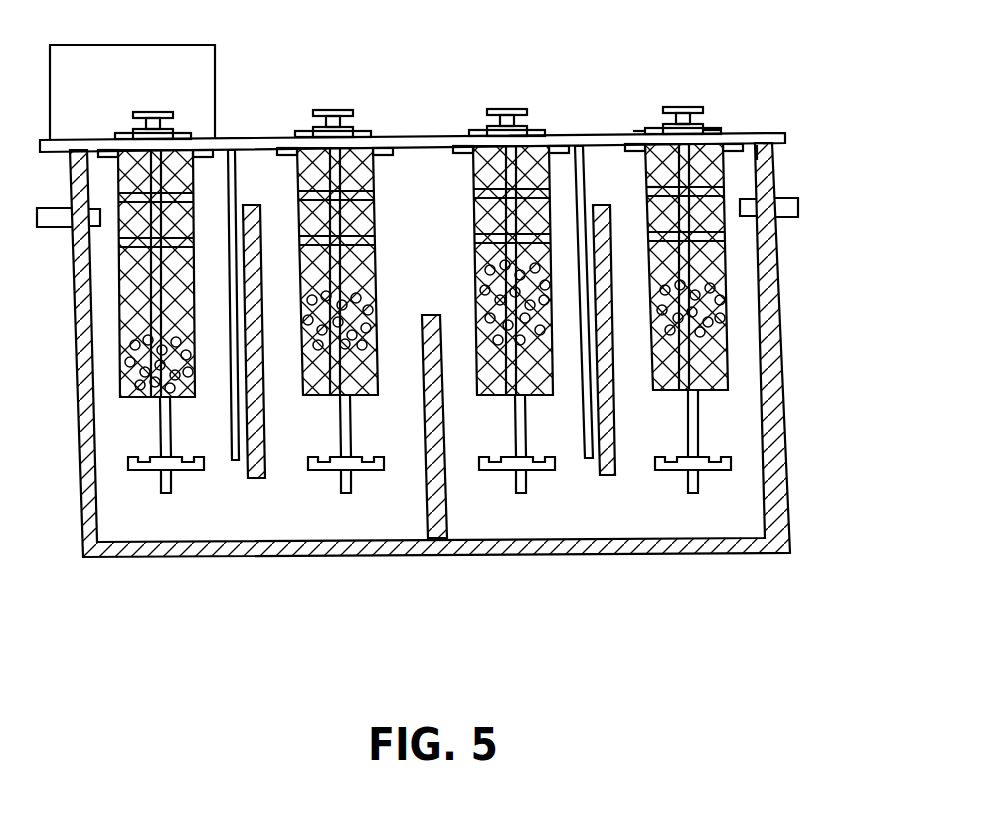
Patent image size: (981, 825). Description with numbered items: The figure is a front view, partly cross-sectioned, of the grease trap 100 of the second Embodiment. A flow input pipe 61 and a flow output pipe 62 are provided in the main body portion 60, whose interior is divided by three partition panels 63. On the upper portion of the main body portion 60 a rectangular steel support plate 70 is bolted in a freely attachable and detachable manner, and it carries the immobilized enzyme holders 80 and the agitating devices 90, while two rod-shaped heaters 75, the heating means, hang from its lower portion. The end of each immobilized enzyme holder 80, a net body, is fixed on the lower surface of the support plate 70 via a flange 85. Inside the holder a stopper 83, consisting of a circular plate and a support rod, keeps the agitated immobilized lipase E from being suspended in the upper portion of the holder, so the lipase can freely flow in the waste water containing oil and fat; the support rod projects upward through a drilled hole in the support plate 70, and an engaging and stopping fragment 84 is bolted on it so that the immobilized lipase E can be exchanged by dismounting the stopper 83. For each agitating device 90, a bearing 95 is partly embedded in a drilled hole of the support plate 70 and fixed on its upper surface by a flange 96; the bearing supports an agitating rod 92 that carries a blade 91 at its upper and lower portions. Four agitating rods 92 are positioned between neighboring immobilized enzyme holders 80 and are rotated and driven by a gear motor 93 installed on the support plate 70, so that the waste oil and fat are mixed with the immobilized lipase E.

The grease trap 100 is at (469, 49).
The main body portion 60 is at (345, 555).
The flow input pipe 61 is at (47, 228).
The flow output pipe 62 is at (780, 218).
The partition panel 63 is at (258, 478).
The support plate 70 is at (417, 138).
The heater 75 is at (236, 157).
The immobilized enzyme holder 80 is at (122, 382).
The stopper 83 is at (654, 196).
The engaging and stopping fragment 84 is at (698, 130).
The flange 85 is at (770, 154).
The agitating device 90 is at (165, 116).
The blade 91 is at (720, 232).
The agitating rod 92 is at (167, 432).
The motor 93 is at (155, 72).
The bearing 95 is at (665, 122).
The flange 96 is at (708, 131).
The immobilized lipase E is at (130, 365).